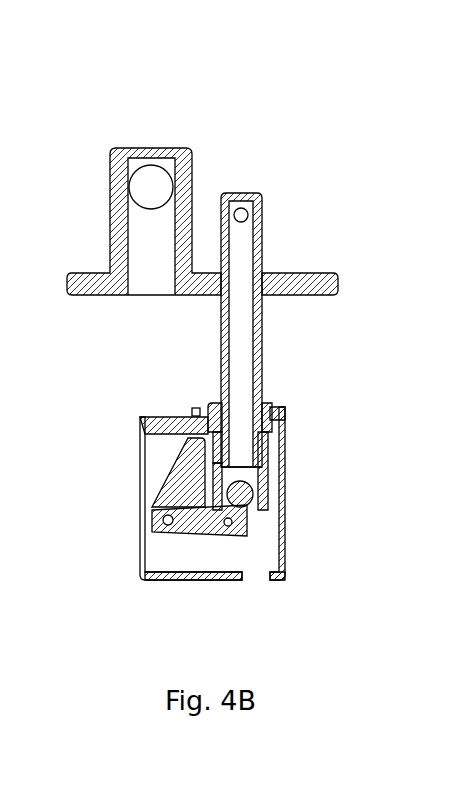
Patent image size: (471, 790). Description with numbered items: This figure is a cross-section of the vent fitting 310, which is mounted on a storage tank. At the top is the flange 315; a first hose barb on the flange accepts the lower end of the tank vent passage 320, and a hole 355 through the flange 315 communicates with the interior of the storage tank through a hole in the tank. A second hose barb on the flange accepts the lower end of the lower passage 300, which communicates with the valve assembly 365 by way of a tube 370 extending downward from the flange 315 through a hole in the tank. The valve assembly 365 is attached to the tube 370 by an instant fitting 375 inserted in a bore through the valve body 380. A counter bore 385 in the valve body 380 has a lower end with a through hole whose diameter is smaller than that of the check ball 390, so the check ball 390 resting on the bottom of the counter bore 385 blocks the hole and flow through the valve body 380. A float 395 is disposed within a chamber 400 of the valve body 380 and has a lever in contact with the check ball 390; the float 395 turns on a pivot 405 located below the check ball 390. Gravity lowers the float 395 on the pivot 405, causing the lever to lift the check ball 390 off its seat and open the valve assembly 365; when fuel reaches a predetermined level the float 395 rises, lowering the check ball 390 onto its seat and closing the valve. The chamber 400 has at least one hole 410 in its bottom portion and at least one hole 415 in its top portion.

The lower passage 300 is at (242, 213).
The vent fitting 310 is at (407, 118).
The flange 315 is at (302, 287).
The tank vent passage 320 is at (146, 173).
The hole 355 is at (145, 295).
The valve assembly 365 is at (387, 403).
The tube 370 is at (248, 357).
The instant fitting 375 is at (263, 432).
The valve body 380 is at (177, 425).
The counter bore 385 is at (246, 472).
The check ball 390 is at (254, 497).
The float 395 is at (152, 517).
The chamber 400 is at (253, 550).
The pivot 405 is at (222, 517).
The hole 410 is at (255, 575).
The hole 415 is at (142, 467).